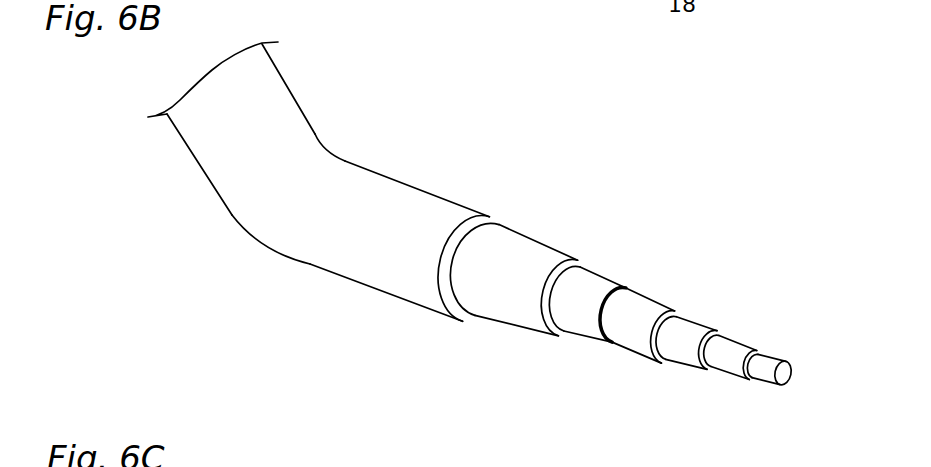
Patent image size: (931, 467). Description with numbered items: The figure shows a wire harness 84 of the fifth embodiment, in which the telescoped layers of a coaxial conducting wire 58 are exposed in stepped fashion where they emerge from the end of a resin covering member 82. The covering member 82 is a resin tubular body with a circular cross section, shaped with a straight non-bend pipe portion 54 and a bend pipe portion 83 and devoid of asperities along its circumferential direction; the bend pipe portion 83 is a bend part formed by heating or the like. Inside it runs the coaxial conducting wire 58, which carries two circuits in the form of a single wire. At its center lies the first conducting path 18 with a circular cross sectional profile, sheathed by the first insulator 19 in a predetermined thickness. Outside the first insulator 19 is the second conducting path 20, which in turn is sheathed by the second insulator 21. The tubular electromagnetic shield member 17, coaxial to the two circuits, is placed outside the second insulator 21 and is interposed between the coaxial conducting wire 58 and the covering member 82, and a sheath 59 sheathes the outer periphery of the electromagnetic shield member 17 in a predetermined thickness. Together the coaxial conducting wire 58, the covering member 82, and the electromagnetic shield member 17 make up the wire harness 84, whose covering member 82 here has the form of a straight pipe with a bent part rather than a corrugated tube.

The non-bend pipe portion 54 is at (212, 133).
The bend pipe portion 83 is at (255, 202).
The covering member 82 is at (443, 212).
The sheath 59 is at (507, 307).
The electromagnetic shield member 17 is at (590, 327).
The second insulator 21 is at (633, 338).
The second conducting path 20 is at (685, 355).
The first insulator 19 is at (728, 367).
The first conducting path 18 is at (760, 373).
The coaxial conducting wire 58 is at (658, 363).
The wire harness 84 is at (616, 300).